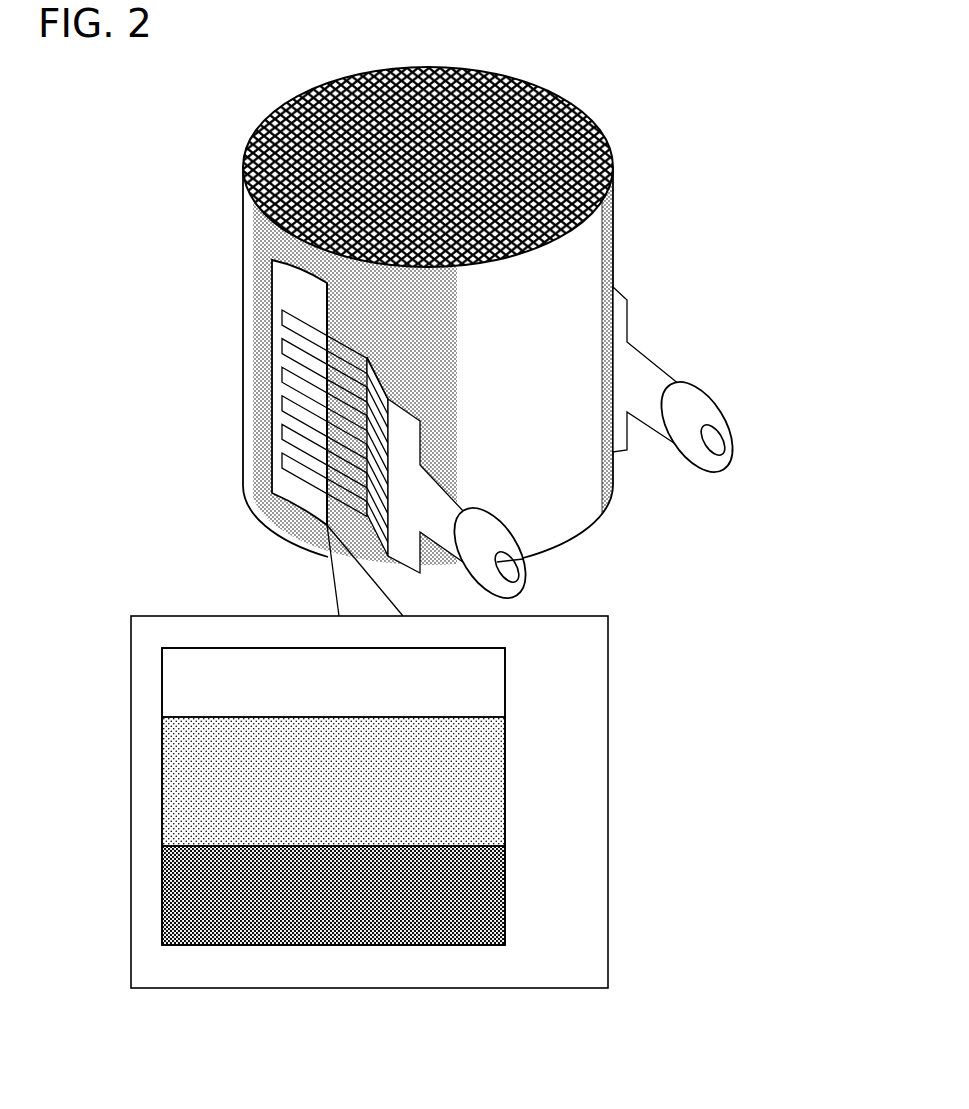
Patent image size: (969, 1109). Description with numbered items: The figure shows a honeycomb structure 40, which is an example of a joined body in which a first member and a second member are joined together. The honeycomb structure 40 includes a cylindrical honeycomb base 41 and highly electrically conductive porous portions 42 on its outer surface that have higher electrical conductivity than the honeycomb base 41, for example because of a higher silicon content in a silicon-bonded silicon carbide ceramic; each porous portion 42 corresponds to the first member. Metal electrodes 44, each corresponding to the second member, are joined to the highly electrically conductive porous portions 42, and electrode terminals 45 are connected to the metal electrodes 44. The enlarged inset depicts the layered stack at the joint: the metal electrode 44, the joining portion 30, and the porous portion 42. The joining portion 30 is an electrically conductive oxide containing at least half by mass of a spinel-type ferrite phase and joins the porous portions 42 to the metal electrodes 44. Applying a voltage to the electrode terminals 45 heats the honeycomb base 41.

The honeycomb structure 40 is at (660, 79).
The honeycomb base 41 is at (613, 163).
The highly electrically conductive porous portion 42 is at (373, 320).
The metal electrode 44 is at (285, 292).
The electrode terminal 45 is at (417, 420).
The joining portion 30 is at (505, 752).